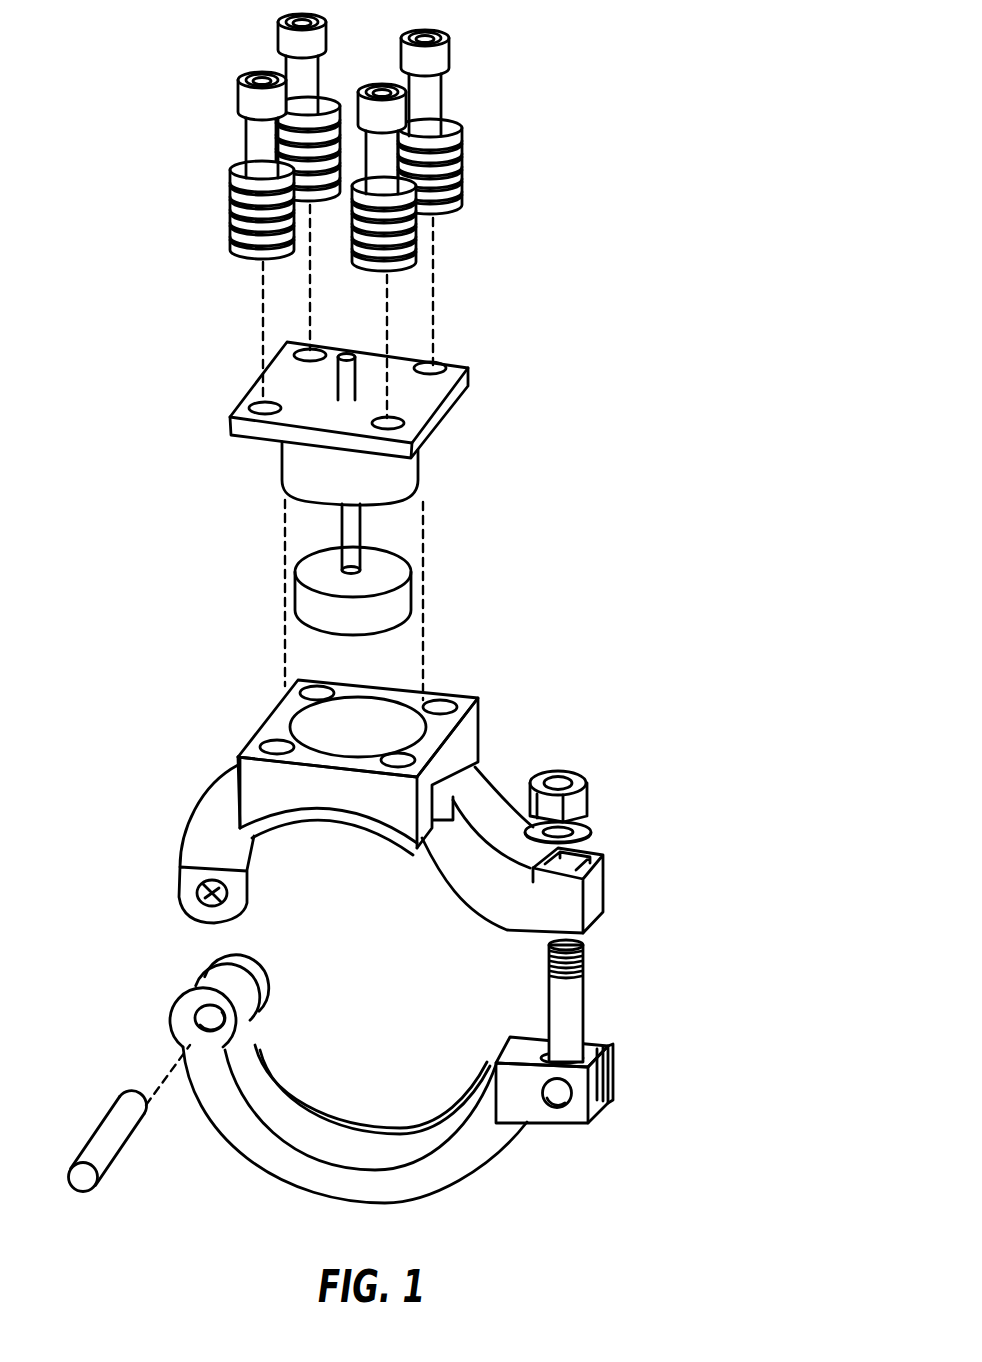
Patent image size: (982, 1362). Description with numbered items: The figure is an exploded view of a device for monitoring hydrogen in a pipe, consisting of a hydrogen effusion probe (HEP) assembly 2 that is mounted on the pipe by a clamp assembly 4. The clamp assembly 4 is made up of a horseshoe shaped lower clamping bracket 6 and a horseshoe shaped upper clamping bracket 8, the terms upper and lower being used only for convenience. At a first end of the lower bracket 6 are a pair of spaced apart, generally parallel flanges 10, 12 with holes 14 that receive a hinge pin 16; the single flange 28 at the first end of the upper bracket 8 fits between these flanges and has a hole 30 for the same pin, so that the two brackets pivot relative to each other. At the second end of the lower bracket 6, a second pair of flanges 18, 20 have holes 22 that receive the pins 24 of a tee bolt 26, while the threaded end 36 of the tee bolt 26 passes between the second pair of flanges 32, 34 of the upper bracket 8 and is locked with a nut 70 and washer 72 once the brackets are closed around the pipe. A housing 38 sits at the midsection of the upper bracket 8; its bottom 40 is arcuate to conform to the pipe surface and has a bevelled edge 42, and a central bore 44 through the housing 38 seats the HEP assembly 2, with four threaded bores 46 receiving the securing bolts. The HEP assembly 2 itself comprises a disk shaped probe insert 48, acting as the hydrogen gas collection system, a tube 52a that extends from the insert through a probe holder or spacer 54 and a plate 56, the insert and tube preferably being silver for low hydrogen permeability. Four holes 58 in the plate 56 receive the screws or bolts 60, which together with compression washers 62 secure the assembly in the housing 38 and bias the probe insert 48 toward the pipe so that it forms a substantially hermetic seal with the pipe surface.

The hydrogen effusion probe assembly 2 is at (472, 522).
The clamp assembly 4 is at (687, 883).
The lower clamping bracket 6 is at (380, 1097).
The upper clamping bracket 8 is at (495, 797).
The flange 10 is at (187, 1007).
The flange 12 is at (208, 967).
The holes 14 is at (200, 1038).
The hinge pin 16 is at (108, 1150).
The flange 18 is at (582, 1112).
The flange 20 is at (613, 1063).
The holes 22 is at (566, 1088).
The pins 24 is at (556, 1096).
The tee bolt 26 is at (635, 982).
The flange 28 is at (180, 883).
The hole 30 is at (200, 908).
The flange 32 is at (373, 839).
The flange 34 is at (603, 880).
The threaded end 36 is at (585, 955).
The housing 38 is at (318, 790).
The bottom 40 is at (370, 842).
The bevelled edge 42 is at (277, 826).
The central bore 44 is at (290, 725).
The threaded bores 46 is at (317, 688).
The probe insert 48 is at (403, 595).
The tube 52a is at (333, 390).
The probe holder (spacer) 54 is at (403, 475).
The plate 56 is at (397, 352).
The holes 58 is at (297, 352).
The bolts 60 is at (280, 28).
The compression washers 62 is at (223, 163).
The nut 70 is at (587, 790).
The washer 72 is at (591, 832).